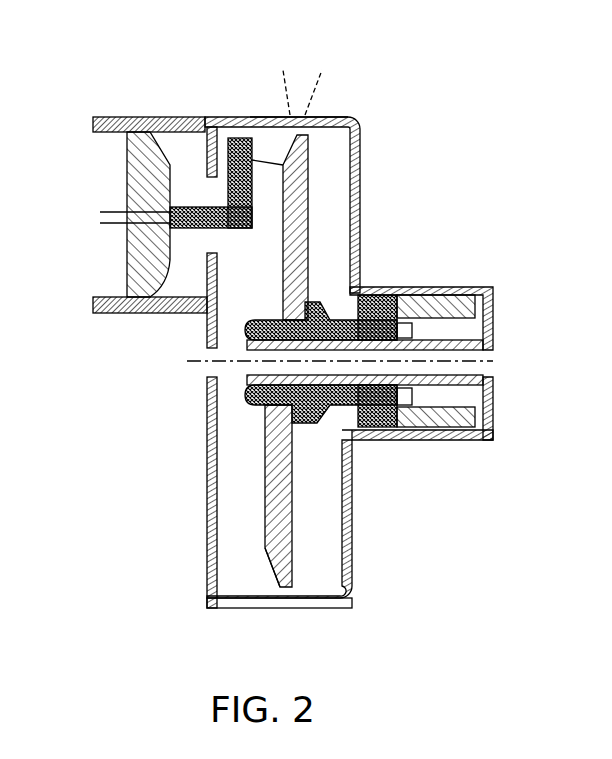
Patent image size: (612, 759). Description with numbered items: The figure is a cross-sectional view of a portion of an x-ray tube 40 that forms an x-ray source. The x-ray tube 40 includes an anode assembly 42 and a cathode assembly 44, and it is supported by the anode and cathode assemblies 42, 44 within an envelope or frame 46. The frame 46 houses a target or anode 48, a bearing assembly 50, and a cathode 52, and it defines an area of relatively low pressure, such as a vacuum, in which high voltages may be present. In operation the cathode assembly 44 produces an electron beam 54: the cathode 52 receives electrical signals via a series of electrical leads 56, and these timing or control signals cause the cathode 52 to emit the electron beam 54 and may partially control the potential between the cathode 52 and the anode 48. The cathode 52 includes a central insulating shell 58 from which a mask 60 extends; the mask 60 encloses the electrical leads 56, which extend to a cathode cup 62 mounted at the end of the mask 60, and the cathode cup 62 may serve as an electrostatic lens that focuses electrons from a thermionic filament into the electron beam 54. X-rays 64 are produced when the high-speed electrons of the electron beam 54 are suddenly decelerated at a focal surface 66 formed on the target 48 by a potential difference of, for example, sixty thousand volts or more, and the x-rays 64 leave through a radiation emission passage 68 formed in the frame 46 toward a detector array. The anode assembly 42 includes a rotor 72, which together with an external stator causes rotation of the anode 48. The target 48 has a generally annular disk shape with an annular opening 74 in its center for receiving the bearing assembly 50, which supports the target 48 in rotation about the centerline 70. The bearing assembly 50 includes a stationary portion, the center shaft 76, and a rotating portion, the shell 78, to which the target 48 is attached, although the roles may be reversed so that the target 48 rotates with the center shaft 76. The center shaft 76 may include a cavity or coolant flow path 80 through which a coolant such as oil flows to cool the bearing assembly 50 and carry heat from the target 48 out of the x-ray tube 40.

The x-ray tube 40 is at (302, 70).
The anode assembly 42 is at (368, 116).
The cathode assembly 44 is at (188, 106).
The frame 46 is at (225, 608).
The target 48 is at (308, 206).
The bearing assembly 50 is at (416, 396).
The cathode 52 is at (218, 180).
The electron beam 54 is at (258, 170).
The electrical leads 56 is at (112, 212).
The central insulating shell 58 is at (127, 148).
The mask 60 is at (195, 228).
The cathode cup 62 is at (245, 138).
The x-rays 64 is at (333, 84).
The focal surface 66 is at (265, 575).
The radiation emission passage 68 is at (325, 113).
The centerline 70 is at (205, 356).
The rotor 72 is at (440, 292).
The annular opening 74 is at (272, 318).
The center shaft 76 is at (490, 372).
The shell 78 is at (330, 405).
The coolant flow path 80 is at (497, 362).